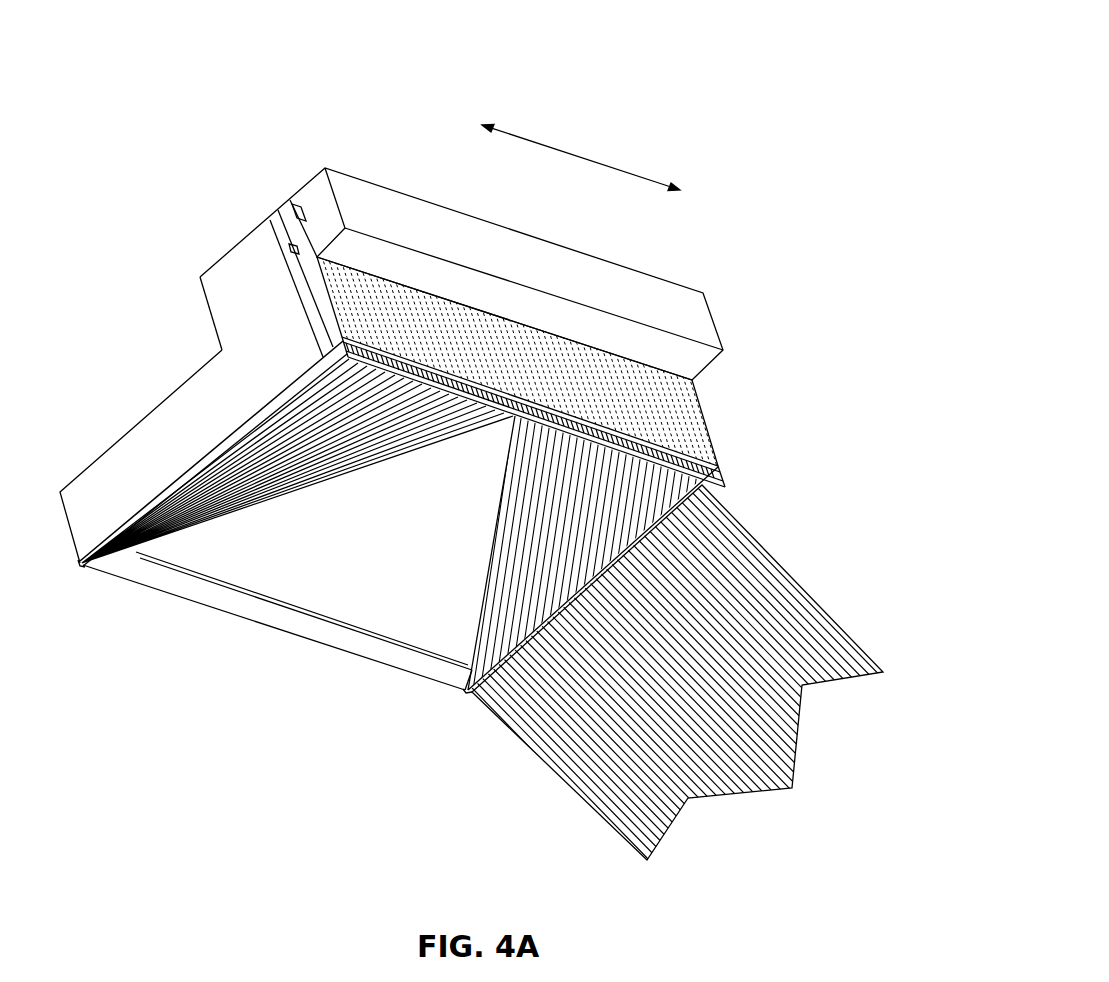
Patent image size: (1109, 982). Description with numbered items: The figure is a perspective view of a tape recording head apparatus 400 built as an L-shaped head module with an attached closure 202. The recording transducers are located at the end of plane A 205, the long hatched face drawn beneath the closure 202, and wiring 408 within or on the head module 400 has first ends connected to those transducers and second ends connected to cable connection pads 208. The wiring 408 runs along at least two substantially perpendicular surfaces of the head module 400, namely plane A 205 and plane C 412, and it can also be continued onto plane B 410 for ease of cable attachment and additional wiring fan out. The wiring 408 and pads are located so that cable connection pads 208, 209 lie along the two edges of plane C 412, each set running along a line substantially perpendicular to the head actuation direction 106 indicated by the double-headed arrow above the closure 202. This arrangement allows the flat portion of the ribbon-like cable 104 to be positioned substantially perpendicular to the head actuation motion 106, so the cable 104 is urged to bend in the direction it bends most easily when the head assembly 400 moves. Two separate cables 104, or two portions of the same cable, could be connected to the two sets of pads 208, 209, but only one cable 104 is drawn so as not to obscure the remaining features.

The tape recording head/apparatus 400 is at (122, 226).
The closure 202 is at (362, 158).
The Plane A (nozzle face plane) 205 is at (531, 368).
The plane B 410 is at (141, 456).
The plane C 412 is at (400, 581).
The wiring 408 is at (243, 501).
The cable connection pads 208 is at (69, 587).
The cable connection pads 209 is at (451, 724).
The head actuation direction 106 is at (587, 138).
The cable 104 is at (811, 562).